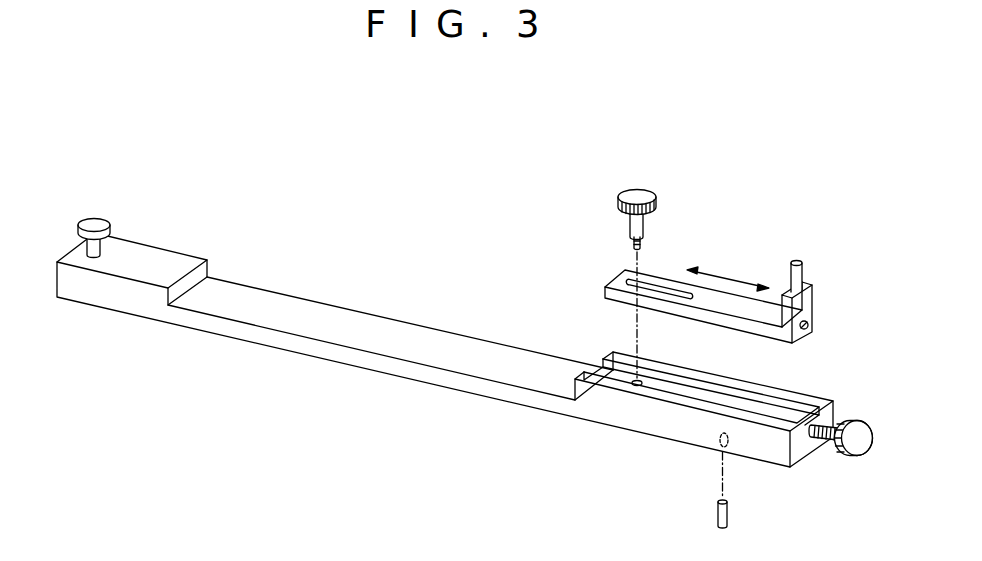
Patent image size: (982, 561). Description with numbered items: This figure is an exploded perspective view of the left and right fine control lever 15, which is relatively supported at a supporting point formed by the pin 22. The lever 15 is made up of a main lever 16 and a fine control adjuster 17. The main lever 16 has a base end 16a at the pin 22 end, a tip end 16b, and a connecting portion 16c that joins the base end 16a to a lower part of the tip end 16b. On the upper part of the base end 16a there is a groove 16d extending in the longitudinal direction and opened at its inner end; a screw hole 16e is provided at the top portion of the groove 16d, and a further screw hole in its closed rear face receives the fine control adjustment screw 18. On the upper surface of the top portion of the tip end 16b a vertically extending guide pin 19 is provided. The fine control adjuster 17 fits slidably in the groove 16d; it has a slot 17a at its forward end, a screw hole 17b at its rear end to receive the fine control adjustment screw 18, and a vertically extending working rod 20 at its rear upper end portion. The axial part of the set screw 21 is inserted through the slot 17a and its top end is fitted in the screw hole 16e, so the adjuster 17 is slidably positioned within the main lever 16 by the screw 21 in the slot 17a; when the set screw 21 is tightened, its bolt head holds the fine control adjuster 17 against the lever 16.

The left and right fine control lever 15 is at (509, 199).
The main lever 16 is at (385, 320).
The base end 16a is at (823, 400).
The tip end 16b is at (157, 257).
The connecting portion 16c is at (458, 350).
The groove 16d is at (767, 397).
The screw hole 16e is at (631, 379).
The fine control adjuster 17 is at (772, 302).
The slot 17a is at (665, 288).
The screw hole 17b is at (813, 322).
The fine control adjustment screw 18 is at (857, 452).
The guide pin 19 is at (92, 216).
The working rod 20 is at (799, 260).
The set screw 21 is at (635, 194).
The pin 22 is at (728, 516).